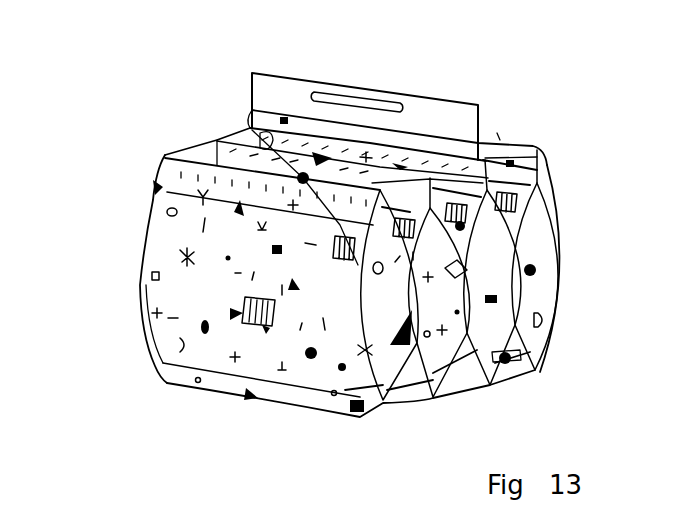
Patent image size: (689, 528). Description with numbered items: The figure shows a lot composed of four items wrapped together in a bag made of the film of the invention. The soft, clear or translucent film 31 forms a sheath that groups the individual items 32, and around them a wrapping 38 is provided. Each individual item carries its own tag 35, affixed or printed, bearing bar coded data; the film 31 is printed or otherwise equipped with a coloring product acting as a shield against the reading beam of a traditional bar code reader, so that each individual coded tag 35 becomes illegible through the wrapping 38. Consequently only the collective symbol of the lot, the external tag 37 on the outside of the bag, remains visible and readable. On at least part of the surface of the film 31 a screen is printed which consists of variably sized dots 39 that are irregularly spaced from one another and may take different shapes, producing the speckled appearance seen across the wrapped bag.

The film 31 is at (152, 207).
The individual items 32 is at (497, 136).
The tag 35 is at (250, 126).
The external tag 37 is at (245, 303).
The wrapping 38 is at (205, 131).
The dots 39 is at (385, 335).